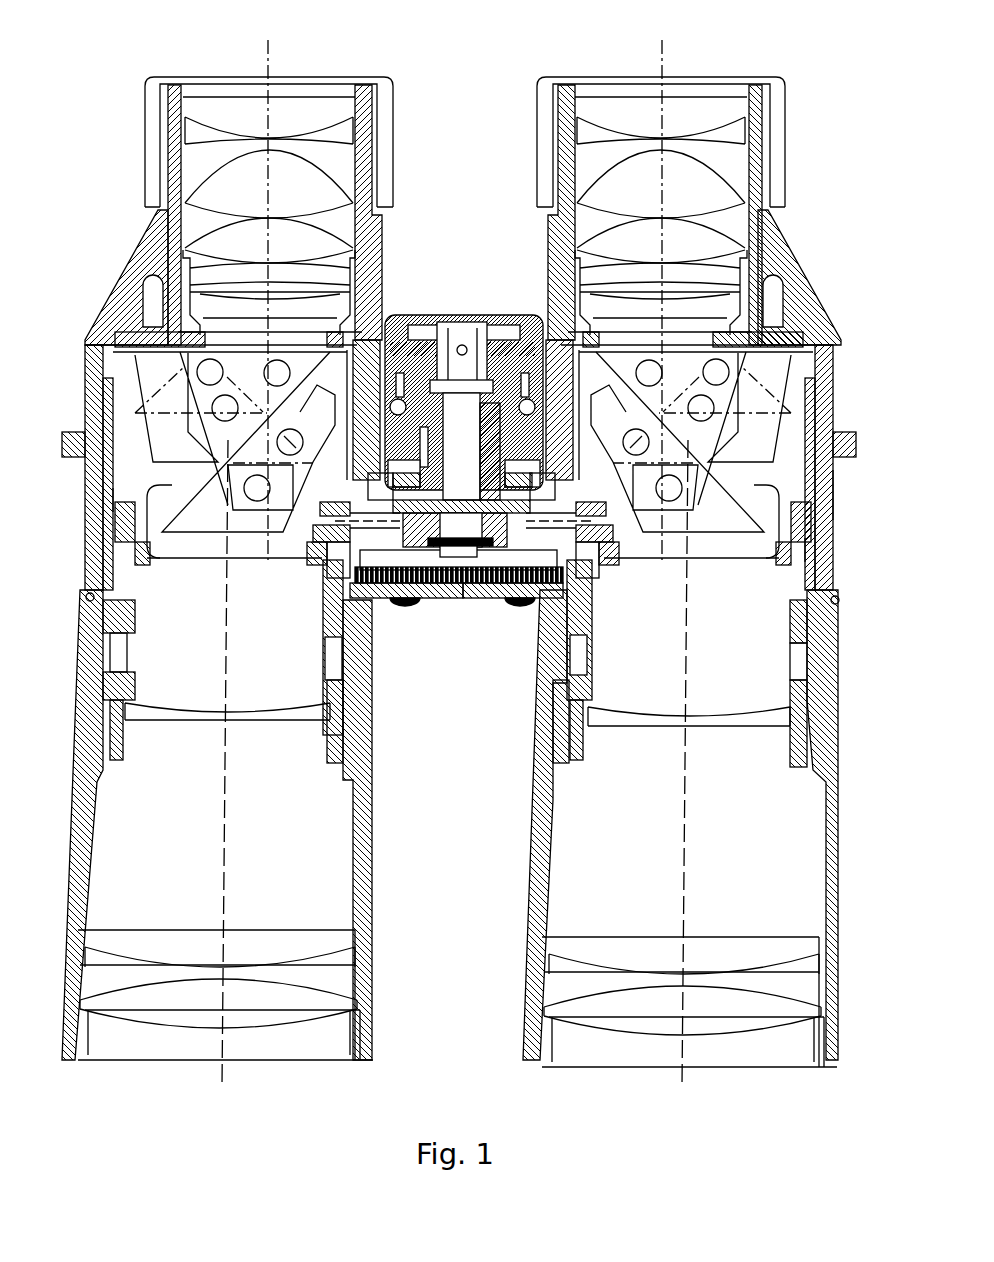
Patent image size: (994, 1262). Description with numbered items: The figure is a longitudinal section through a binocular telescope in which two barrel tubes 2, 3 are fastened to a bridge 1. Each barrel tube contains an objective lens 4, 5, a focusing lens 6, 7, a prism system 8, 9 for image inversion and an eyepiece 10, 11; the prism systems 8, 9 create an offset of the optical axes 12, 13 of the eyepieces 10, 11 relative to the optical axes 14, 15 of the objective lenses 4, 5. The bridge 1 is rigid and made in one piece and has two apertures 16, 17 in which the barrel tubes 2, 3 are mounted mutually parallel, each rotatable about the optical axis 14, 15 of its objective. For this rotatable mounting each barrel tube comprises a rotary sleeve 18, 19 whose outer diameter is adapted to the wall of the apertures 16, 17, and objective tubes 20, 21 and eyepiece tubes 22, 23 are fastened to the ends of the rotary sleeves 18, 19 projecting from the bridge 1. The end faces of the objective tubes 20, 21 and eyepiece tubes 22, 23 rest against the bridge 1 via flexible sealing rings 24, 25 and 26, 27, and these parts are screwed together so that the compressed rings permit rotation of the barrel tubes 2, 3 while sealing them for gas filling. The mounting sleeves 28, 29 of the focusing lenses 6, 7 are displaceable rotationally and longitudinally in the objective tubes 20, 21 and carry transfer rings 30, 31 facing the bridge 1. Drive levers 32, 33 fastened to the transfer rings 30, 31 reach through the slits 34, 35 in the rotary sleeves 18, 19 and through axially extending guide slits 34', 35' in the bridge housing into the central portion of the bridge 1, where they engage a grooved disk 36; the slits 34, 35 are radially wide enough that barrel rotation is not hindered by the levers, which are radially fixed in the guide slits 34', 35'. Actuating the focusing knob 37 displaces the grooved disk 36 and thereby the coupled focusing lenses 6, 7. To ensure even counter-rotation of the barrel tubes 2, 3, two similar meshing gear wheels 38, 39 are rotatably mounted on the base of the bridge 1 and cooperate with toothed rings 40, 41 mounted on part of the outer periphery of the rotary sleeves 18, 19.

The bridge 1 is at (838, 493).
The barrel tube 2 is at (389, 882).
The barrel tube 3 is at (499, 884).
The objective lens 4 is at (245, 1010).
The objective lens 5 is at (718, 1016).
The focusing lens 6 is at (168, 715).
The focusing lens 7 is at (635, 724).
The prism system 8 is at (198, 518).
The prism system 9 is at (720, 520).
The eyepiece 10 is at (300, 118).
The eyepiece 11 is at (692, 118).
The optical axis of the eyepiece 12 is at (275, 178).
The optical axis of the eyepiece 13 is at (580, 195).
The optical axis of the objective lens 14 is at (222, 866).
The optical axis of the objective lens 15 is at (687, 868).
The aperture 16 is at (92, 425).
The aperture 17 is at (825, 427).
The rotary sleeve 18 is at (95, 500).
The rotary sleeve 19 is at (838, 547).
The objective tube 20 is at (372, 828).
The objective tube 21 is at (541, 818).
The eyepiece tube 22 is at (124, 296).
The eyepiece tube 23 is at (808, 295).
The sealing ring 24 is at (131, 460).
The sealing ring 25 is at (784, 465).
The sealing ring 26 is at (88, 601).
The sealing ring 27 is at (838, 605).
The mounting sleeve 28 is at (125, 695).
The mounting sleeve 29 is at (590, 698).
The transfer ring 30 is at (305, 530).
The transfer ring 31 is at (605, 555).
The drive lever 32 is at (372, 540).
The drive lever 33 is at (553, 540).
The slit 34 is at (218, 555).
The slit 35 is at (707, 555).
The guide slit 34' is at (406, 613).
The guide slit 35' is at (513, 620).
The grooved disk 36 is at (460, 600).
The focusing knob 37 is at (418, 312).
The gear wheel 38 is at (443, 600).
The gear wheel 39 is at (468, 600).
The toothed ring 40 is at (318, 600).
The toothed ring 41 is at (598, 598).